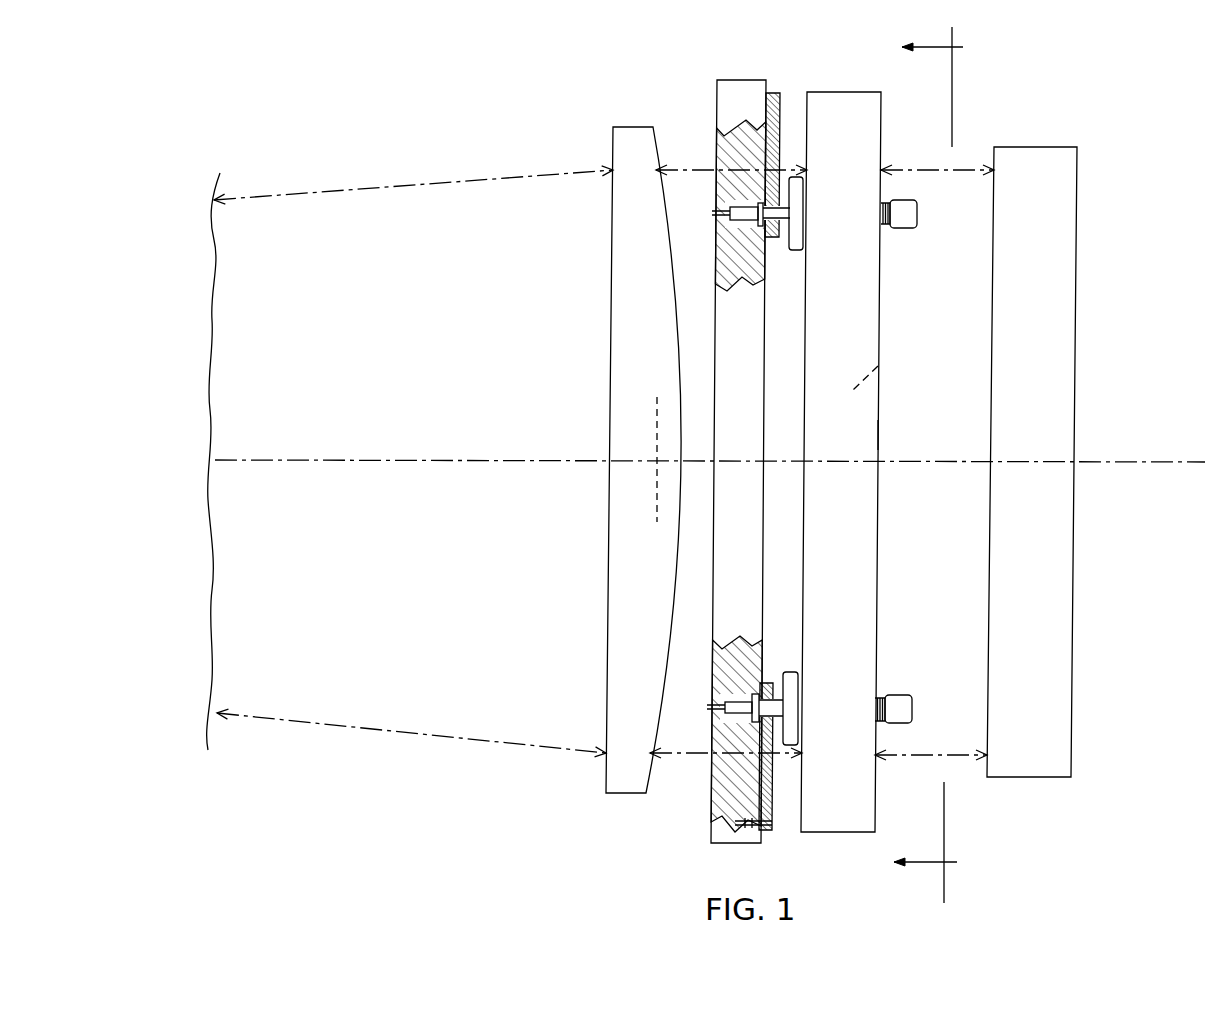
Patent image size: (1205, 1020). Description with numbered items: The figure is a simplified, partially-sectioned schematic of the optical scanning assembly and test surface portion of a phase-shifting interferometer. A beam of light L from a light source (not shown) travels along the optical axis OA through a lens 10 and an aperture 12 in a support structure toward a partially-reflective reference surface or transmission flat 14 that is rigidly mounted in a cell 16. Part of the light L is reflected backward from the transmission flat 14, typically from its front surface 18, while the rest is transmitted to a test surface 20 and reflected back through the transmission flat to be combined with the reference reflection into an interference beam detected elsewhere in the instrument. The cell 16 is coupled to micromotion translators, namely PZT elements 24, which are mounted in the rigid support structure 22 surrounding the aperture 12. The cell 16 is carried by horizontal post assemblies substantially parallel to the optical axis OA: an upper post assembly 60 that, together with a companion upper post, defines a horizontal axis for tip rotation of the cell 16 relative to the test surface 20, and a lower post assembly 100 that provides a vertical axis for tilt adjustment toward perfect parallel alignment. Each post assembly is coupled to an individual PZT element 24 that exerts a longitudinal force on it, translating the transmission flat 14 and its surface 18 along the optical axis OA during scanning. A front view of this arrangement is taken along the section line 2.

The lens 10 is at (619, 128).
The aperture 12 is at (728, 407).
The transmission flat 14 is at (878, 366).
The cell 16 is at (847, 95).
The front surface 18 is at (878, 436).
The test surface 20 is at (1043, 158).
The rigid support structure 22 is at (748, 82).
The PZT element 24 is at (738, 221).
The upper post assembly 60 is at (781, 256).
The lower post assembly 100 is at (775, 668).
The section line 2- 2 is at (939, 465).
The beam of light L is at (256, 197).
The optical axis OA is at (1140, 461).